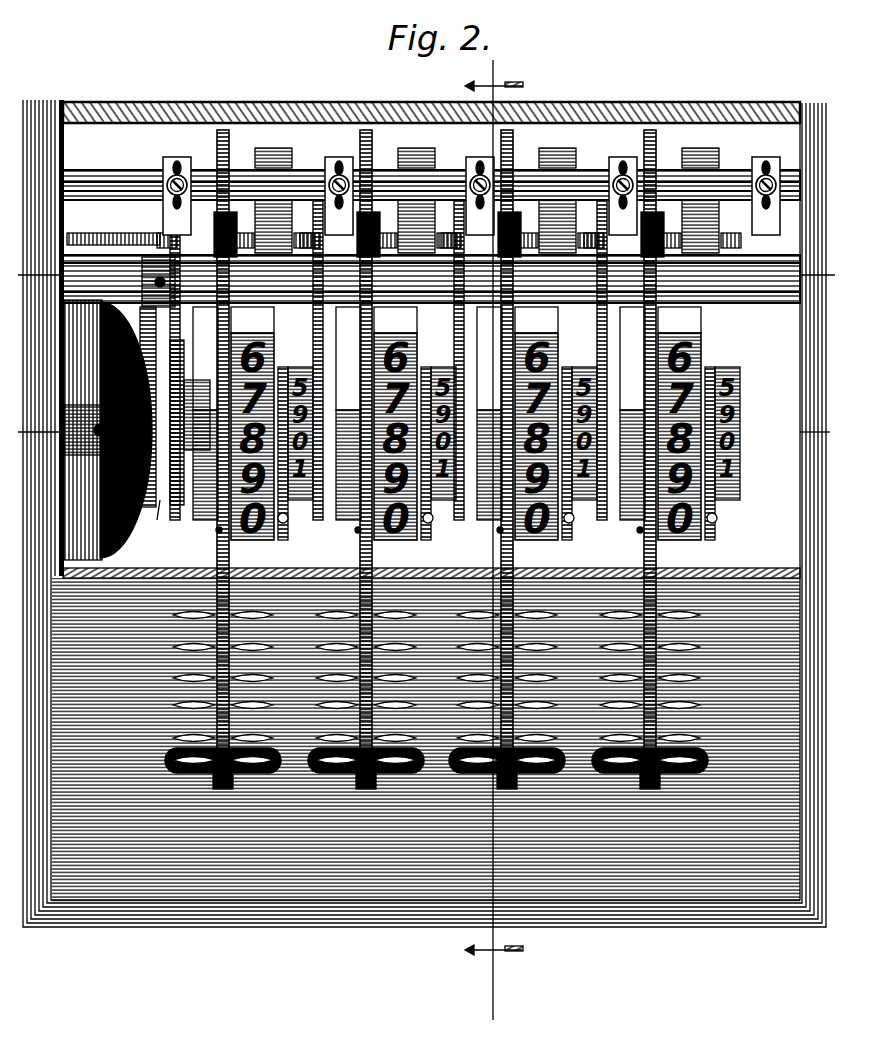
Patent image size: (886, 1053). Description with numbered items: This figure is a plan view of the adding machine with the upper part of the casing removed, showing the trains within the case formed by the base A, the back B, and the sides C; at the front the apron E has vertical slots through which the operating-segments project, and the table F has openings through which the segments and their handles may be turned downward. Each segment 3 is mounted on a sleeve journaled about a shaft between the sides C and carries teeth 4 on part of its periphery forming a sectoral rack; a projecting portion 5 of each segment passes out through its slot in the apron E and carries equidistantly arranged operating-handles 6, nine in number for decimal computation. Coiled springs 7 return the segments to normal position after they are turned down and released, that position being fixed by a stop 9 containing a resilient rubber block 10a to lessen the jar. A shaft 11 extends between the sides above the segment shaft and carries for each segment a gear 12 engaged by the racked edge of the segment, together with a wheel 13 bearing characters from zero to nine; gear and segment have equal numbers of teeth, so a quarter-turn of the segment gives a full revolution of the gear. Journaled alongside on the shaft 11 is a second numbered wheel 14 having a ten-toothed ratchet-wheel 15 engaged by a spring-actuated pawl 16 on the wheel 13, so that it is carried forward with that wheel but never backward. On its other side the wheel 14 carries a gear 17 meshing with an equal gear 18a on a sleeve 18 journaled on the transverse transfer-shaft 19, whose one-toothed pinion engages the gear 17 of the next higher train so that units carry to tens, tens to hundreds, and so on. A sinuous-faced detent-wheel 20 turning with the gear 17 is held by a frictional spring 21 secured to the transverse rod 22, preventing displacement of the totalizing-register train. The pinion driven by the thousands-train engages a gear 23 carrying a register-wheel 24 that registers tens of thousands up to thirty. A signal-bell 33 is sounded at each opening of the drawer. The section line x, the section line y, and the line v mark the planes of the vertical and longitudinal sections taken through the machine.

The base A is at (300, 908).
The back B is at (182, 102).
The sides C is at (68, 158).
The apron E is at (148, 578).
The table F is at (400, 890).
The segment 3 is at (216, 142).
The teeth 4 is at (217, 530).
The projecting portion of segment 5 is at (210, 592).
The operating-handles 6 is at (250, 613).
The coiled springs 7 is at (487, 150).
The stop 9 is at (122, 233).
The block 10a is at (232, 212).
The shaft 11 is at (780, 400).
The gear 12 is at (640, 380).
The wheel 13 is at (231, 345).
The second numbered wheel 14 is at (508, 517).
The ten-toothed ratchet-wheel 15 is at (292, 372).
The spring-actuated pawl 16 is at (498, 463).
The gear 17 is at (355, 530).
The sleeve 18 is at (431, 307).
The gear 18a is at (316, 200).
The transfer-shaft 19 is at (95, 233).
The sinuous-faced detent-wheel 20 is at (328, 522).
The frictional spring 21 is at (471, 196).
The transverse rod 22 is at (125, 170).
The gear 23 is at (175, 407).
The register-wheel 24 is at (158, 506).
The signal-bell 33 is at (148, 345).
The section line x x is at (494, 543).
The section line y y is at (428, 423).
The section line v v is at (428, 265).